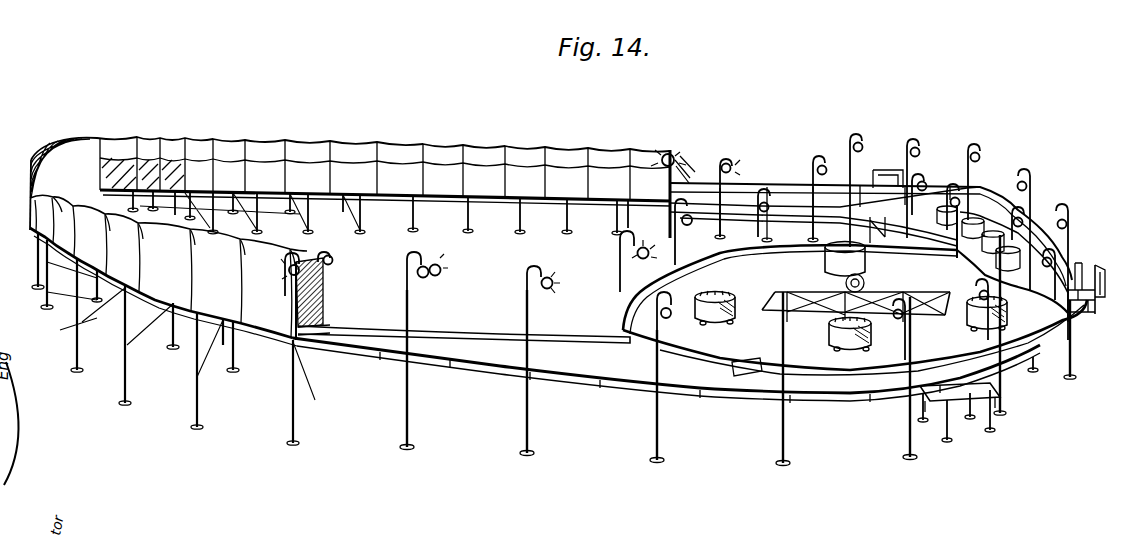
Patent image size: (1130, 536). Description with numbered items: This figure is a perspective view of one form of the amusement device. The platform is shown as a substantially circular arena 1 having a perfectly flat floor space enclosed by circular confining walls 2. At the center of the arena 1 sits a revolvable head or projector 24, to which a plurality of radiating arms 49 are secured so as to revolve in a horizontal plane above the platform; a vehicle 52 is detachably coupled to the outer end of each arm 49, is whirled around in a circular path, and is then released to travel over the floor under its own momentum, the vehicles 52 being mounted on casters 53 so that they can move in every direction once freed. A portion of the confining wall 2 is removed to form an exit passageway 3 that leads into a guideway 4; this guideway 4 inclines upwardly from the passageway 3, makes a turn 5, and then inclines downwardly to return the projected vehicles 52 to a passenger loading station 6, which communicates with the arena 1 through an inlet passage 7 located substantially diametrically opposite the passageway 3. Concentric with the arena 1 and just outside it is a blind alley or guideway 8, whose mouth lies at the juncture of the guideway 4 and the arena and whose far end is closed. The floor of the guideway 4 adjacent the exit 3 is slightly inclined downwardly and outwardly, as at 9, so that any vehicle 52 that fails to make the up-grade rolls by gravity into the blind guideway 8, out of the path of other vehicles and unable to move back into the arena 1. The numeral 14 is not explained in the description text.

The arena 1 is at (893, 366).
The circular confining walls 2 is at (797, 247).
The exit passageway 3 is at (733, 368).
The guideway 4 is at (507, 357).
The turn 5 is at (70, 150).
The passenger loading station 6 is at (1037, 237).
The inlet passage 7 is at (983, 250).
The blind alley or guideway 8 is at (760, 400).
The inclined floor portion 9 is at (666, 364).
The landing 14 is at (950, 390).
The revolvable head or projector 24 is at (880, 293).
The radiating arms 49 is at (937, 313).
The vehicles 52 is at (722, 297).
The casters 53 is at (700, 321).